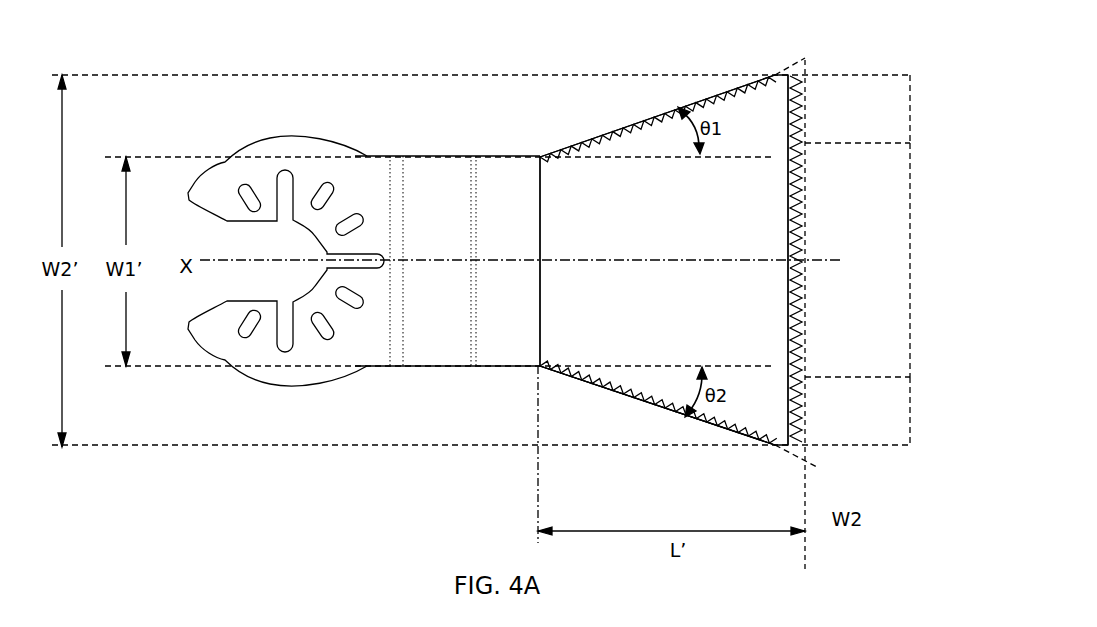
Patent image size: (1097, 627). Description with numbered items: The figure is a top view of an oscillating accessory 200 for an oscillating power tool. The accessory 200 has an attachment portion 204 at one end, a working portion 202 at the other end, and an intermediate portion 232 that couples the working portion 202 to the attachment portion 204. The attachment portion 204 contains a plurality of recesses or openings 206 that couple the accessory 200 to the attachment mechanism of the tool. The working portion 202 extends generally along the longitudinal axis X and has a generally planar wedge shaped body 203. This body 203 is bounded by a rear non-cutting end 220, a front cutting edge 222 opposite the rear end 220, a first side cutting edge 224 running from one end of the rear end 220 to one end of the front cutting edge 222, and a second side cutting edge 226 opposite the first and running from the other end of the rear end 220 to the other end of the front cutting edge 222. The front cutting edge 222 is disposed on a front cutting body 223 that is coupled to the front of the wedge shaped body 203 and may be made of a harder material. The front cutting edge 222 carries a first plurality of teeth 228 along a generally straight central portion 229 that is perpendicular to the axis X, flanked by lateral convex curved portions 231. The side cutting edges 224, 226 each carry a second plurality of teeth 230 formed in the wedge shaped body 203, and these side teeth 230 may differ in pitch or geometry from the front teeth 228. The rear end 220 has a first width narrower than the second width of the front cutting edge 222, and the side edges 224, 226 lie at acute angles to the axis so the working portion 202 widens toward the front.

The oscillating accessory 200 is at (534, 124).
The working portion 202 is at (662, 377).
The wedge shaped body 203 is at (600, 287).
The attachment portion 204 is at (302, 382).
The recesses or openings 206 is at (329, 160).
The rear non-cutting end 220 is at (535, 370).
The front cutting edge 222 is at (805, 195).
The front cutting body 223 is at (790, 318).
The first side cutting edge 224 is at (733, 80).
The second side cutting edge 226 is at (733, 437).
The first plurality of teeth 228 is at (805, 232).
The central portion 229 is at (912, 260).
The second plurality of teeth 230 is at (609, 130).
The lateral convex curved portions 231 is at (912, 110).
The intermediate portion 232 is at (438, 368).